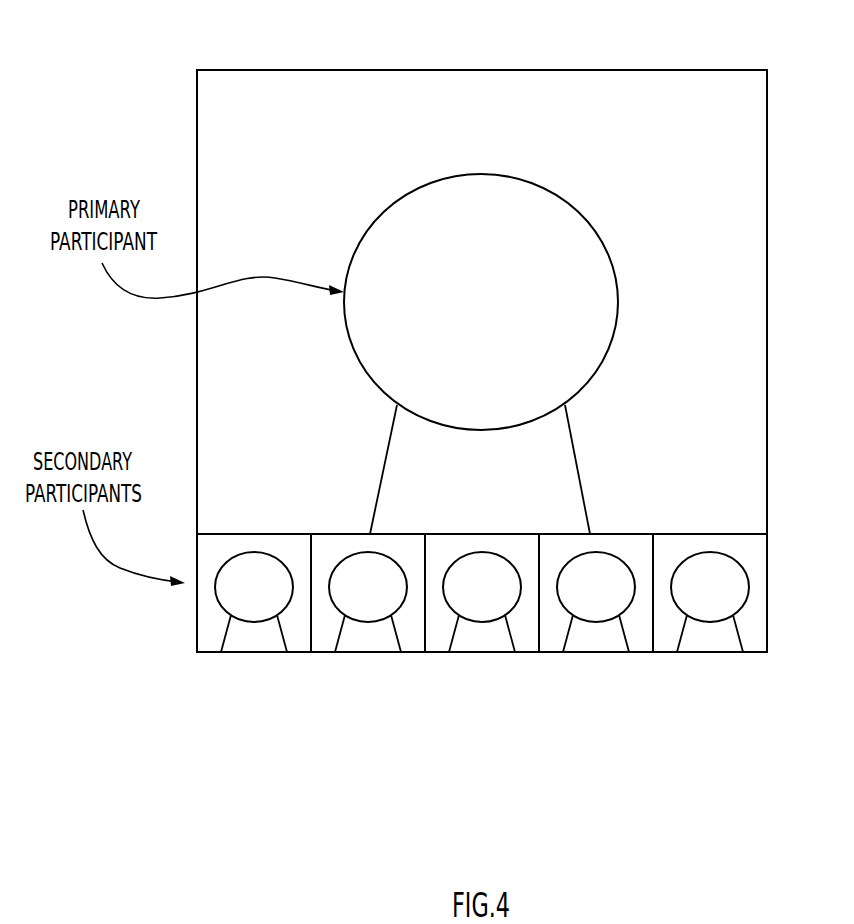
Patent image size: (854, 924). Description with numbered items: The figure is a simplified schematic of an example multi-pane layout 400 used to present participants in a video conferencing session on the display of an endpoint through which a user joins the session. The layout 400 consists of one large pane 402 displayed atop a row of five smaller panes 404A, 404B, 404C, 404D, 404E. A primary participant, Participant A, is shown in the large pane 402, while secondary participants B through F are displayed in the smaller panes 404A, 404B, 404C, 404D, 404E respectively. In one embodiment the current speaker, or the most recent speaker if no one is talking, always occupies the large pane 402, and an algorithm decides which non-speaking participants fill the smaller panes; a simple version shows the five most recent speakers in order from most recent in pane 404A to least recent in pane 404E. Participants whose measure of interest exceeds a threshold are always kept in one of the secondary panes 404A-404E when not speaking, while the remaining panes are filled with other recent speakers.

The multi-pane layout 400 is at (150, 82).
The large pane 402 is at (687, 70).
The smaller pane 404A is at (213, 642).
The smaller pane 404B is at (327, 642).
The smaller pane 404C is at (442, 642).
The smaller pane 404D is at (556, 642).
The smaller pane 404E is at (670, 642).